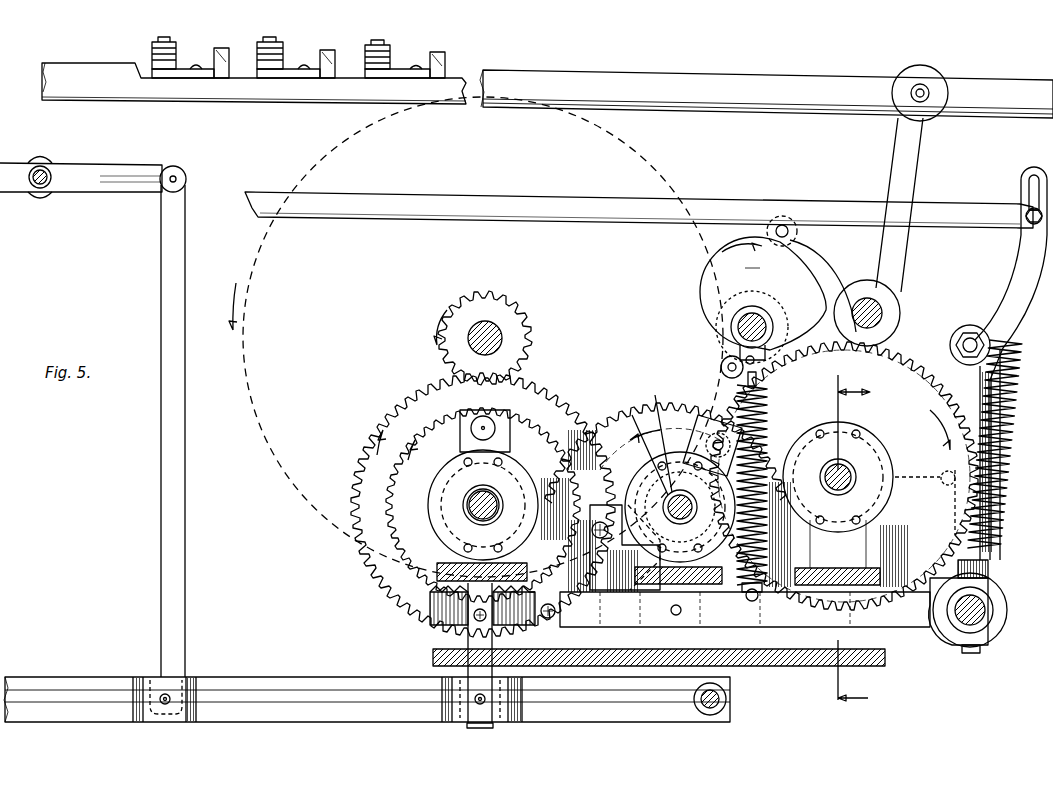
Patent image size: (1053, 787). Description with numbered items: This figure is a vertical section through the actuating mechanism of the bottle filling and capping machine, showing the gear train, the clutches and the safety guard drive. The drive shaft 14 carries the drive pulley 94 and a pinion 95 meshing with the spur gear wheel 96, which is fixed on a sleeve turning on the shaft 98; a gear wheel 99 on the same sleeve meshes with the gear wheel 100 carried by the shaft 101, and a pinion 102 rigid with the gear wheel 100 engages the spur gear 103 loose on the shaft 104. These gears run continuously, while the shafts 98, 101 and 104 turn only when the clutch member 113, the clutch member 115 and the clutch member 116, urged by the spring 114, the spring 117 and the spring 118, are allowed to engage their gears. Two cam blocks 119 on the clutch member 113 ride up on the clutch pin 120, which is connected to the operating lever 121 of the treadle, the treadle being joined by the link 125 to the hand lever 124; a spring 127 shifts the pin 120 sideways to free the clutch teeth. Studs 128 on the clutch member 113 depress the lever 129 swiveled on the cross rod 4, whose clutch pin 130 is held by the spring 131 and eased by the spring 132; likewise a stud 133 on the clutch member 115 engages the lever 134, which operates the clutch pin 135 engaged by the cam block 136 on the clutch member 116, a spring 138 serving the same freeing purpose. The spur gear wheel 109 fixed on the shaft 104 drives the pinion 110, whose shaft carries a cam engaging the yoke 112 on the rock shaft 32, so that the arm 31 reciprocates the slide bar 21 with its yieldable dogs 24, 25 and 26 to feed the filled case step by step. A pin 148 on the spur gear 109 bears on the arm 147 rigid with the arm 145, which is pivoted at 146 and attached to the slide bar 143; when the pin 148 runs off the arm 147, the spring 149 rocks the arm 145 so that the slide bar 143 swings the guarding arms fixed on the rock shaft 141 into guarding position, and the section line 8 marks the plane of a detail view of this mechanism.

The cross rod 4 is at (983, 604).
The section line 8- 8 is at (848, 546).
The drive shaft 14 is at (490, 326).
The slide bar 21 is at (765, 82).
The spring-pressed yieldable dog 24 is at (217, 52).
The spring-pressed yieldable dog 25 is at (323, 54).
The spring-pressed yieldable dog 26 is at (437, 56).
The arm 31 is at (922, 86).
The rock shaft 32 is at (880, 306).
The drive pulley 94 is at (246, 392).
The pinion 95 is at (522, 328).
The spur gear wheel 96 is at (402, 410).
The shaft 98 is at (472, 512).
The gear wheel 99 is at (522, 406).
The gear wheel 100 is at (720, 368).
The shaft 101 is at (690, 412).
The pinion 102 is at (626, 432).
The spur gear 103 is at (862, 443).
The shaft 104 is at (872, 456).
The spur gear wheel 109 is at (903, 350).
The pinion 110 is at (738, 292).
The yoke 112 is at (812, 232).
The clutch member 113 is at (440, 500).
The spring 114 is at (466, 510).
The clutch member 115 is at (652, 425).
The clutch member 116 is at (770, 440).
The spring 117 is at (760, 450).
The spring 118 is at (840, 462).
The cam block 119 is at (455, 455).
The clutch pin 120 is at (465, 642).
The operating lever 121 is at (328, 724).
The hand lever 124 is at (120, 172).
The link 125 is at (160, 479).
The spring 127 is at (470, 616).
The stud 128 is at (476, 420).
The lever 129 is at (745, 617).
The clutch pin 130 is at (730, 600).
The spring 131 is at (770, 420).
The spring 132 is at (558, 622).
The stud 133 is at (714, 430).
The lever 134 is at (585, 500).
The clutch pin 135 is at (852, 638).
The cam block 136 is at (880, 520).
The spring 138 is at (530, 464).
The rock shaft 141 is at (740, 284).
The slide bar 143 is at (514, 200).
The arm 145 is at (1012, 270).
The pivot 146 is at (968, 337).
The arm 147 is at (1002, 437).
The pin 148 is at (946, 472).
The spring 149 is at (990, 517).